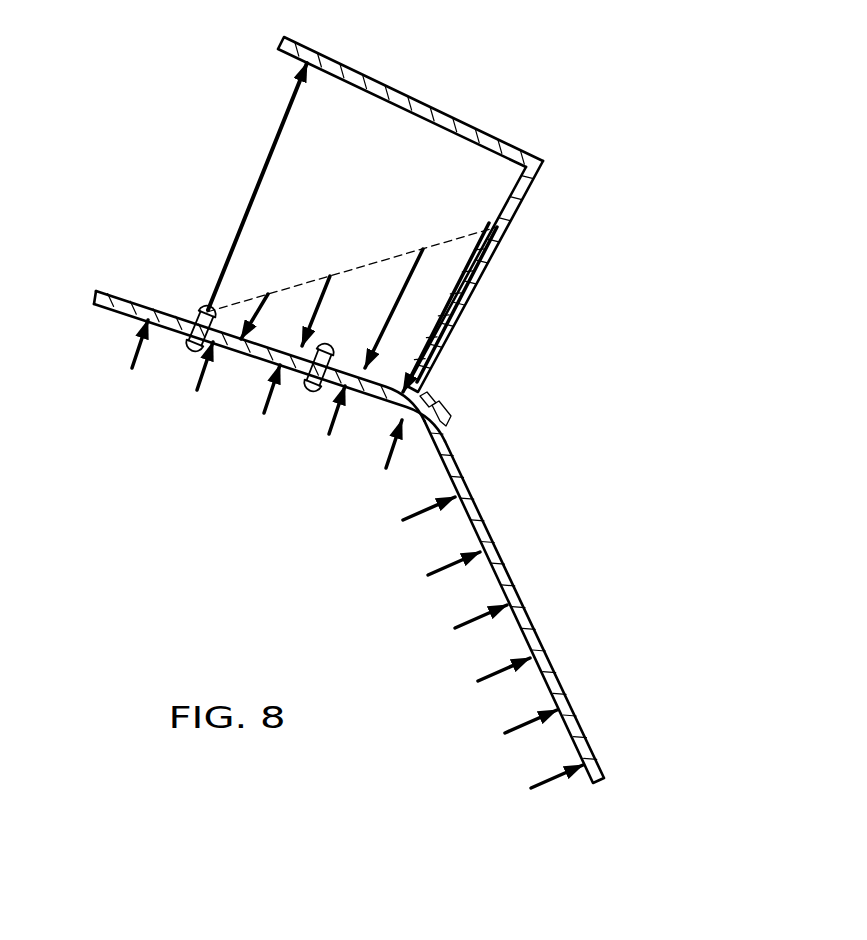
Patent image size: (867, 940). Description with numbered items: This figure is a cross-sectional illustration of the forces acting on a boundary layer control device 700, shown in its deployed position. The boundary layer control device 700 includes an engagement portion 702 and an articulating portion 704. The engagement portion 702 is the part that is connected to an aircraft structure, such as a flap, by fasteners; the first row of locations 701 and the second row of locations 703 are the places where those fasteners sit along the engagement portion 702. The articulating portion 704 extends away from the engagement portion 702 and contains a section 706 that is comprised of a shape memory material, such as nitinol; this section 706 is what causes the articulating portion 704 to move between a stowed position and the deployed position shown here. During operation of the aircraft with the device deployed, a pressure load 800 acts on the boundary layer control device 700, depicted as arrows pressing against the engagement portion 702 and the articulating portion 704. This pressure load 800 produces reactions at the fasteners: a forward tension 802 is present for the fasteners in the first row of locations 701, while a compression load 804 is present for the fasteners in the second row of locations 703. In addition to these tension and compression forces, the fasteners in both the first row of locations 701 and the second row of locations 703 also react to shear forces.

The boundary layer control device 700 is at (597, 786).
The first row of locations 701 is at (195, 302).
The engagement portion 702 is at (57, 420).
The second row of locations 703 is at (335, 345).
The articulating portion 704 is at (448, 432).
The section 706 is at (440, 395).
The pressure load 800 is at (395, 482).
The forward tension 802 is at (256, 187).
The compression load 804 is at (442, 241).